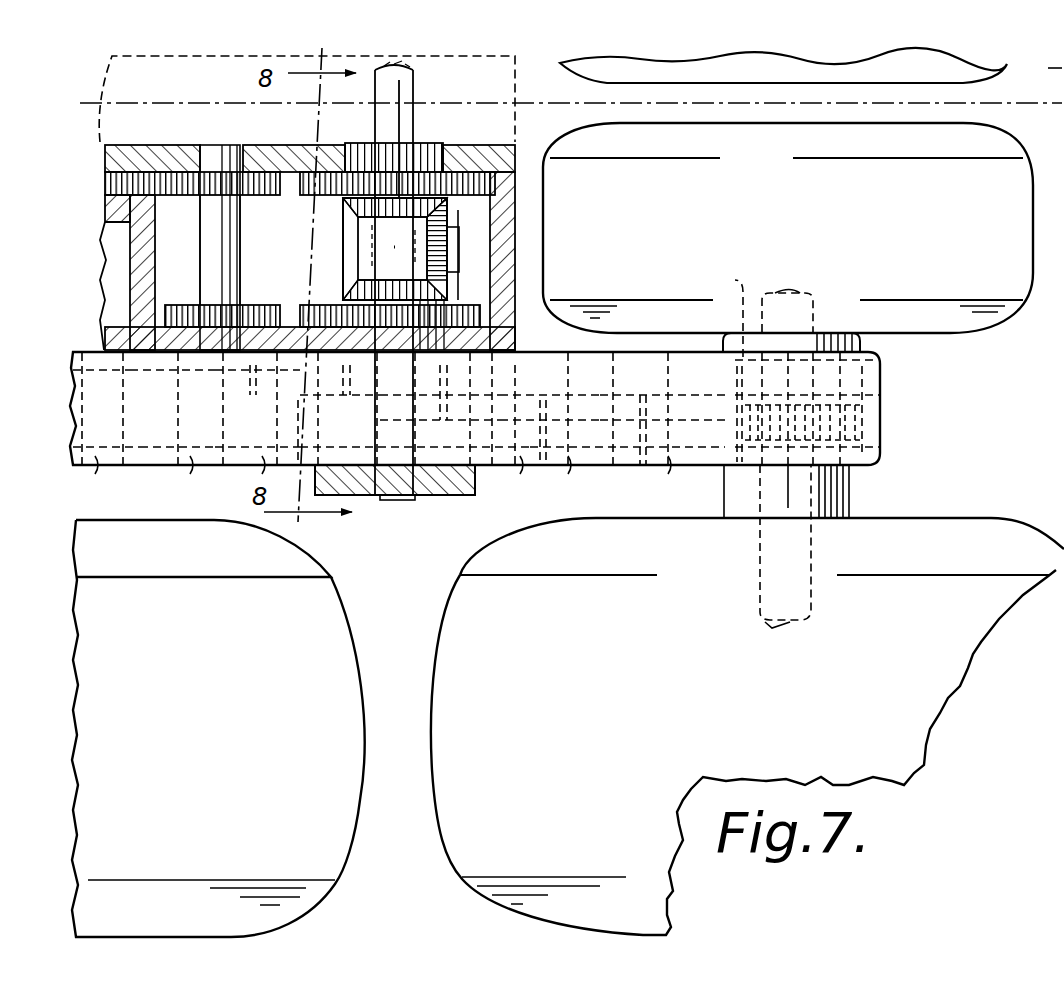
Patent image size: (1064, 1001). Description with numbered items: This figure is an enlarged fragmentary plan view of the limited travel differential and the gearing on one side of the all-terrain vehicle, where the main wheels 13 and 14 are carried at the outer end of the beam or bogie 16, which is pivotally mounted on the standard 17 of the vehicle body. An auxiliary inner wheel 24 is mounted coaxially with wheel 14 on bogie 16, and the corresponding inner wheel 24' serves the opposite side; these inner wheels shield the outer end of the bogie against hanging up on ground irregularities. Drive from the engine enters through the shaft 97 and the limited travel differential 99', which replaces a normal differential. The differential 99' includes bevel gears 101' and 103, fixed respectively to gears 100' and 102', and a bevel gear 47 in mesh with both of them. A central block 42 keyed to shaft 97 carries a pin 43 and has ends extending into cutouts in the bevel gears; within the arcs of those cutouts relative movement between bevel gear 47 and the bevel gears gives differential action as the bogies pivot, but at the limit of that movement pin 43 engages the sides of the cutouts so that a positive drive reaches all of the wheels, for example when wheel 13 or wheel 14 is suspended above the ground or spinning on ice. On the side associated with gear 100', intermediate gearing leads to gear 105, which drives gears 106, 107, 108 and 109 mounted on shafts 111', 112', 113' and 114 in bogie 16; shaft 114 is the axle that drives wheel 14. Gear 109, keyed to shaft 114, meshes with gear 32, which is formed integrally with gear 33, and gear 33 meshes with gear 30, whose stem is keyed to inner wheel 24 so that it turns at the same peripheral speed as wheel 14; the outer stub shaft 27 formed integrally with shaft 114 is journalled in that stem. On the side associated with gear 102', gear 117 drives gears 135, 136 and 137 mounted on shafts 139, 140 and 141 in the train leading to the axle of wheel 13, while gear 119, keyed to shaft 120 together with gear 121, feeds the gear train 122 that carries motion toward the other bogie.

The main wheel 13 is at (326, 848).
The main wheel 14 is at (936, 694).
The beam or bogie 16 is at (880, 408).
The standard 17 is at (384, 500).
The auxiliary inner wheel 24 is at (788, 240).
The auxiliary inner wheel 24' is at (783, 123).
The outer stub shaft 27 is at (755, 446).
The gear 30 is at (877, 378).
The gear 32 is at (885, 444).
The gear 33 is at (860, 375).
The central block 42 is at (360, 258).
The pin 43 is at (340, 228).
The bevel gear 47 is at (448, 212).
The shaft 97 is at (415, 78).
The limited travel differential 99' is at (347, 249).
The gear 100' is at (379, 139).
The bevel gear 101' is at (352, 209).
The gear 102' is at (531, 255).
The bevel gear 103 is at (340, 286).
The gear 105 is at (300, 407).
The gear 106 is at (520, 407).
The gear 107 is at (618, 407).
The gear 108 is at (716, 407).
The gear 109 is at (885, 428).
The shaft 111' is at (506, 480).
The shaft 112' is at (562, 479).
The shaft 113' is at (656, 479).
The shaft 114 is at (805, 540).
The gear 117 is at (497, 372).
The gear 119 is at (192, 309).
The shaft 120 is at (212, 250).
The gear 121 is at (258, 146).
The gear train 122 is at (160, 146).
The gear 135 is at (320, 381).
The gear 136 is at (228, 381).
The gear 137 is at (140, 381).
The shaft 139 is at (268, 470).
The shaft 140 is at (195, 470).
The shaft 141 is at (100, 470).